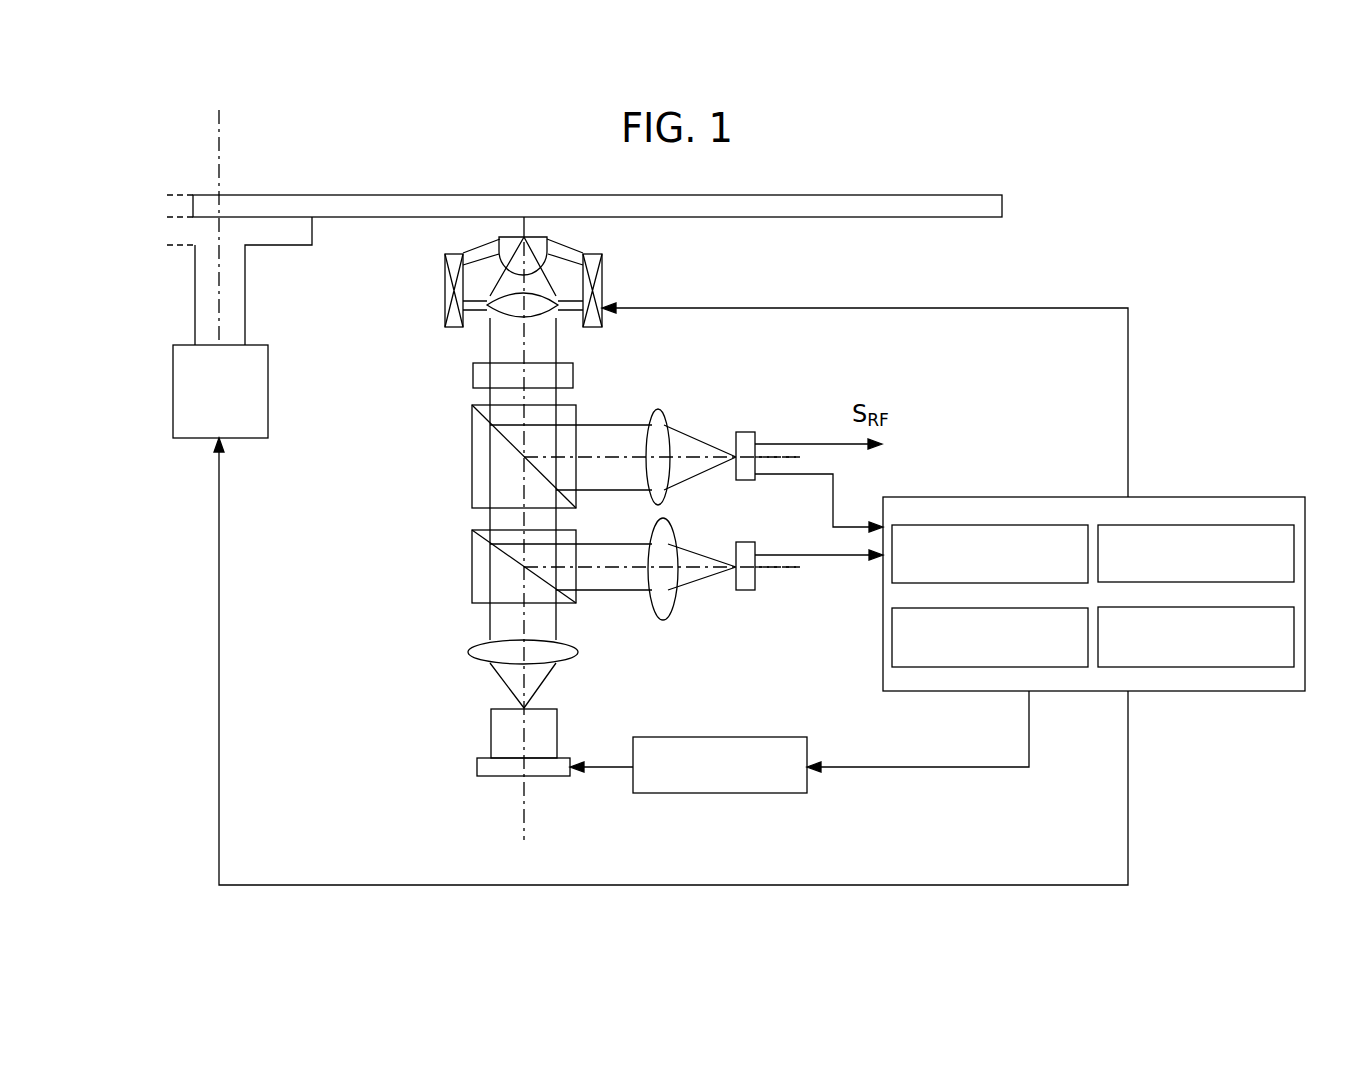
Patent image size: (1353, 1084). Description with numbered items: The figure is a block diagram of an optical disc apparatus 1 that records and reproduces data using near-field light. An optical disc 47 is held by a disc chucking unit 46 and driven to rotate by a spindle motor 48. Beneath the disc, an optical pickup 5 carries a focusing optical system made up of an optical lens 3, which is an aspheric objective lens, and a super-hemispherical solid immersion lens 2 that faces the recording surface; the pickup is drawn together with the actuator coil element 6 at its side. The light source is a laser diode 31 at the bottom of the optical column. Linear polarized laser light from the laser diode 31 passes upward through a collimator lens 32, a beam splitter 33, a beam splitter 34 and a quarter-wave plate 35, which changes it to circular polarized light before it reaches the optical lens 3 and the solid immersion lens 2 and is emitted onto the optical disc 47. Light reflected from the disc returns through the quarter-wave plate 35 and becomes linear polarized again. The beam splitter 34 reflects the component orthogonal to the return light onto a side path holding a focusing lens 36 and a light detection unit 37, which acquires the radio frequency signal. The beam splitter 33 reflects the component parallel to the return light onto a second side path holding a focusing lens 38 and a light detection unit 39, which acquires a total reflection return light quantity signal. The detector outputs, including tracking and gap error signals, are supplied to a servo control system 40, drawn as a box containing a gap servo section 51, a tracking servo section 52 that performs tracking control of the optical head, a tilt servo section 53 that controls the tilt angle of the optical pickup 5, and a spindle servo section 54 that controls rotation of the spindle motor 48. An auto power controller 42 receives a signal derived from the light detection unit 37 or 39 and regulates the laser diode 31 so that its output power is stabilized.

The optical disc apparatus 1 is at (1005, 150).
The solid immersion lens 2 is at (499, 241).
The optical lens 3 is at (484, 321).
The optical pickup 5 is at (503, 283).
The coil 6 is at (606, 283).
The laser diode 31 is at (550, 777).
The collimator lens 32 is at (565, 658).
The beam splitter 33 is at (472, 562).
The beam splitter 34 is at (472, 462).
The λ/4 wave plate 35 is at (473, 372).
The focusing lens 36 is at (658, 410).
The light detection unit 37 is at (745, 432).
The focusing lens 38 is at (665, 620).
The light detection unit 39 is at (748, 590).
The servo control system 40 is at (1094, 605).
The auto power controller 42 is at (748, 794).
The disc chucking unit 46 is at (281, 248).
The optical disc 47 is at (862, 195).
The spindle motor 48 is at (173, 412).
The gap servo section 51 is at (992, 525).
The tracking servo section 52 is at (990, 667).
The tilt servo section 53 is at (1182, 525).
The spindle servo section 54 is at (1183, 667).